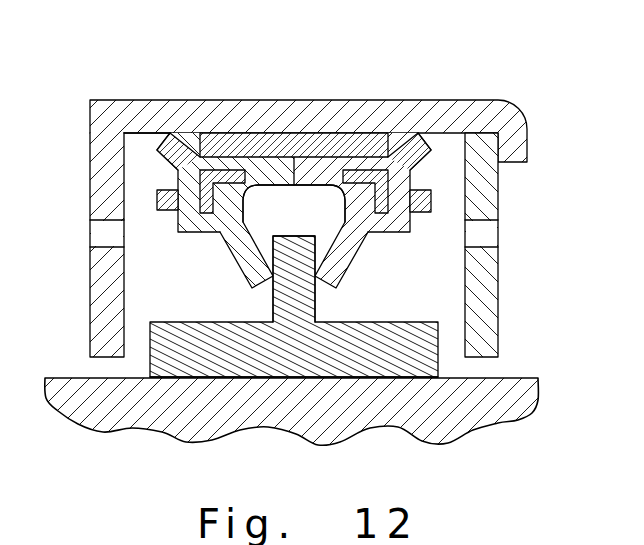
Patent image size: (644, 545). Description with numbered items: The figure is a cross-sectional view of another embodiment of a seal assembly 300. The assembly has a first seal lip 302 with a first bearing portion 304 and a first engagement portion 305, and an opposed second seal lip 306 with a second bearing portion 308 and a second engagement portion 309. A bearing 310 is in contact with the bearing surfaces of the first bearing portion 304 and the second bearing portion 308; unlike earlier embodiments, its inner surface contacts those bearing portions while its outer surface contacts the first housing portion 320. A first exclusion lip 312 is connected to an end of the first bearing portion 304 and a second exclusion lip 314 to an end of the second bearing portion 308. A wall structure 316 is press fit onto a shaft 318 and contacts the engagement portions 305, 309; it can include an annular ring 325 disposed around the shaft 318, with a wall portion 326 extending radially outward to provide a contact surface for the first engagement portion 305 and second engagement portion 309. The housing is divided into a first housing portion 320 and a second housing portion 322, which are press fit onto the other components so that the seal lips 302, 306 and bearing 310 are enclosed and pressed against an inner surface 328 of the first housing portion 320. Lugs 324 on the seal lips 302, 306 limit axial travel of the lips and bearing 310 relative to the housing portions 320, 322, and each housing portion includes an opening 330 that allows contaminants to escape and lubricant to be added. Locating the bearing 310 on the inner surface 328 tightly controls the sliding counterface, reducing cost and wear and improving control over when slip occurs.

The seal assembly 300 is at (540, 96).
The first seal lip 302 is at (207, 213).
The first bearing portion 304 is at (253, 162).
The first engagement portion 305 is at (243, 262).
The second seal lip 306 is at (343, 200).
The second bearing portion 308 is at (323, 170).
The second engagement portion 309 is at (345, 268).
The bearing 310 is at (282, 140).
The first exclusion lip 312 is at (170, 133).
The second exclusion lip 314 is at (430, 137).
The wall structure 316 is at (297, 348).
The shaft 318 is at (317, 420).
The first housing portion 320 is at (98, 198).
The second housing portion 322 is at (493, 305).
The lugs 324 is at (160, 197).
The annular ring 325 is at (417, 367).
The wall portion 326 is at (303, 278).
The inner surface 328 is at (142, 145).
The opening 330 is at (98, 235).